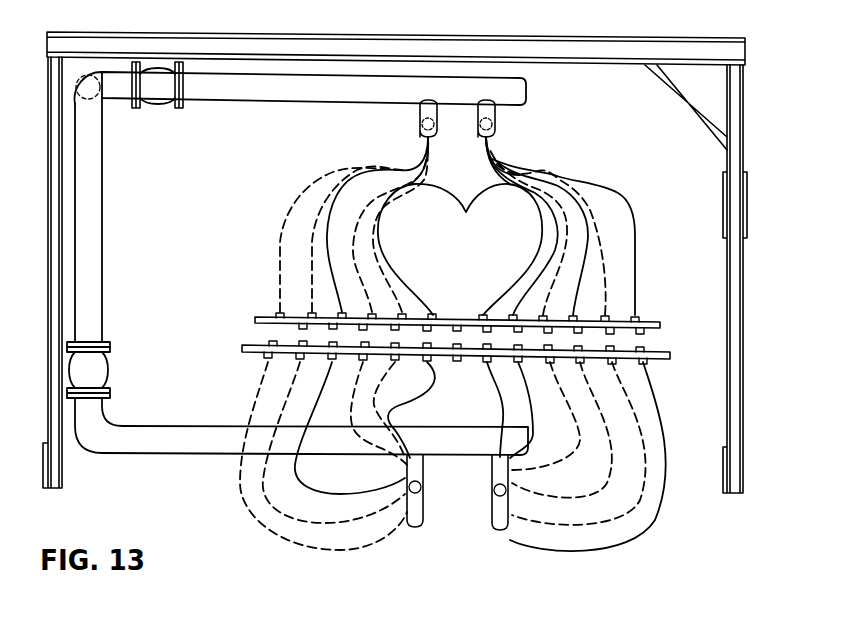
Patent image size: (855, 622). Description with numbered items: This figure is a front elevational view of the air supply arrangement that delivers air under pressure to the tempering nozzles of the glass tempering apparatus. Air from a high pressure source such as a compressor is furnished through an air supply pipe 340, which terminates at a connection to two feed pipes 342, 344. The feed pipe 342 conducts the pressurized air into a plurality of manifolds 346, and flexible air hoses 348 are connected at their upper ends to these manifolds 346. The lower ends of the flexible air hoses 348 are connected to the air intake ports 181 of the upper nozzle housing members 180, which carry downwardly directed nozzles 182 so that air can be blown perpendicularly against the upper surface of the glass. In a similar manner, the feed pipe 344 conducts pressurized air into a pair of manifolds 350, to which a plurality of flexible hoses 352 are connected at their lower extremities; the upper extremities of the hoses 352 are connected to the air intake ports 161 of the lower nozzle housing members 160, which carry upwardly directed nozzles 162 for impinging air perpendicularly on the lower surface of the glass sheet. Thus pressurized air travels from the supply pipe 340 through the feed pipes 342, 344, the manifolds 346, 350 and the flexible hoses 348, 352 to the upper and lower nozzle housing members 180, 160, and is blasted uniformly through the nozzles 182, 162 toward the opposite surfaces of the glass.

The air supply pipe 340 is at (98, 90).
The feed pipe 342 is at (130, 98).
The feed pipe 344 is at (103, 251).
The manifolds 346 is at (481, 120).
The flexible air hoses 348 is at (460, 226).
The upper nozzle housing members 180 is at (268, 316).
The air intake ports 181 is at (513, 313).
The downwardly directed nozzles 182 is at (270, 334).
The lower nozzle housing members 160 is at (660, 359).
The air intake ports 161 is at (488, 362).
The upwardly directed nozzles 162 is at (622, 350).
The manifolds 350 is at (492, 490).
The flexible hoses 352 is at (258, 388).